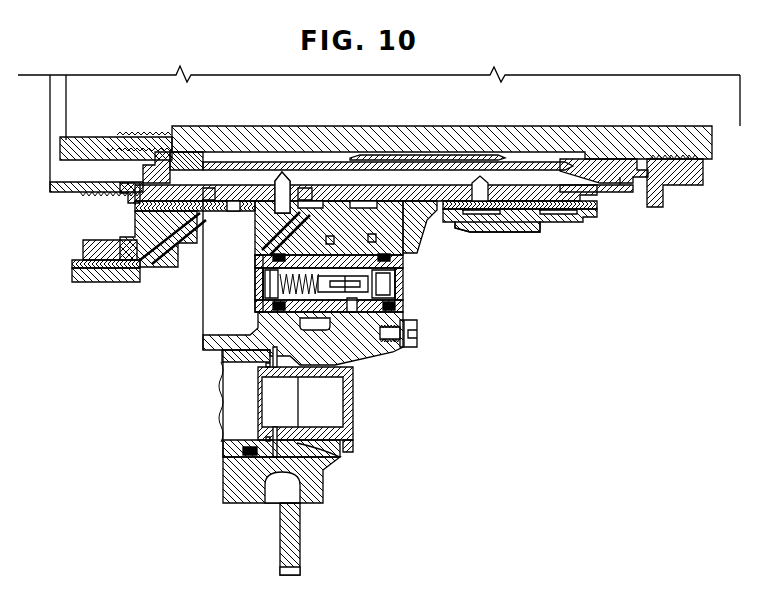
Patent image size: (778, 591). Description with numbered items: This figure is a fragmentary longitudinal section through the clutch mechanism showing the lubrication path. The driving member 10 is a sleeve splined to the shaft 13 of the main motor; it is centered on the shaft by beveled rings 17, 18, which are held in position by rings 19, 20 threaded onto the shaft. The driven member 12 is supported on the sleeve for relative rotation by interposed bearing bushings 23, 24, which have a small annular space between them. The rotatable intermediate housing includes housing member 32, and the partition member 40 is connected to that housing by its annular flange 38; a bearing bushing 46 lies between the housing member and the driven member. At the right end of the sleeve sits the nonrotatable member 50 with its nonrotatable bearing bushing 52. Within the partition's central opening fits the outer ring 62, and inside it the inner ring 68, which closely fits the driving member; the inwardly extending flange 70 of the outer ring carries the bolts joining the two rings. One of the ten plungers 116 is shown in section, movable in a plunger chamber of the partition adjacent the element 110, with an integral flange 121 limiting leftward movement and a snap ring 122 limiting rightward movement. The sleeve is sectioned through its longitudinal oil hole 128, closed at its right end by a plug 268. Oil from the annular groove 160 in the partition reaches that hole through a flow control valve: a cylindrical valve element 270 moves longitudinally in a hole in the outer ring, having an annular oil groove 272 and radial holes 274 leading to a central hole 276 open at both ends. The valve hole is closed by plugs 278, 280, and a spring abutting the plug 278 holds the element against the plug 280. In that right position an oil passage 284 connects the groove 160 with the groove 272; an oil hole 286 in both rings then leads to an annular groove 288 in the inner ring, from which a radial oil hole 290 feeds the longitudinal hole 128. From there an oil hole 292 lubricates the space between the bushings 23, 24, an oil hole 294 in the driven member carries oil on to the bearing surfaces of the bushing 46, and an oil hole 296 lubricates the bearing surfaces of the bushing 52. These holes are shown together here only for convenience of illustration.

The driving member 10 is at (470, 207).
The driven member 12 is at (180, 252).
The shaft 13 is at (516, 137).
The beveled ring 17 is at (618, 192).
The beveled ring 18 is at (135, 195).
The ring 19 is at (686, 187).
The ring 20 is at (87, 155).
The bearing bushing 23 is at (140, 205).
The bearing bushing 24 is at (247, 205).
The housing member 32 is at (78, 280).
The annular flange 38 is at (300, 536).
The partition member 40 is at (330, 452).
The bearing bushing 46 is at (72, 264).
The nonrotatable member 50 is at (481, 231).
The bearing bushing 52 is at (522, 224).
The outer ring 62 is at (402, 305).
The inner ring 68 is at (405, 252).
The inwardly extending flange 70 is at (252, 258).
The flange 110 is at (247, 362).
The plunger 116 is at (350, 406).
The integral flange 121 is at (350, 438).
The snap ring 122 is at (260, 441).
The longitudinal oil hole 128 is at (277, 178).
The annular groove 160 is at (326, 328).
The plug 268 is at (602, 172).
The valve element 270 is at (336, 266).
The annular oil groove 272 is at (354, 268).
The radial hole 274 is at (380, 227).
The central hole 276 is at (330, 240).
The plug 278 is at (265, 288).
The plug 280 is at (386, 286).
The oil passage 284 is at (393, 348).
The oil hole 286 is at (298, 236).
The annular groove 288 is at (303, 192).
The radial oil hole 290 is at (288, 192).
The oil hole 292 is at (212, 196).
The oil hole 294 is at (160, 262).
The oil hole 296 is at (498, 222).